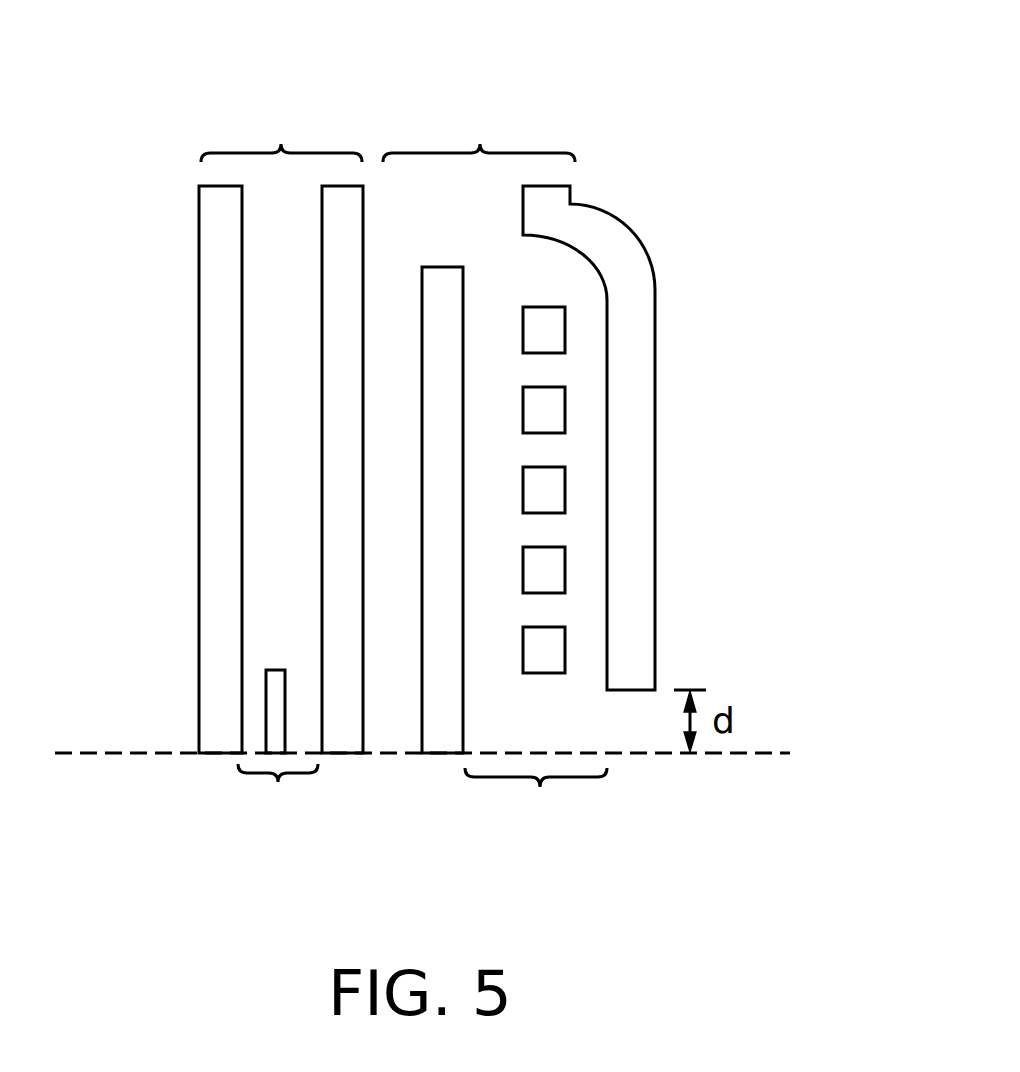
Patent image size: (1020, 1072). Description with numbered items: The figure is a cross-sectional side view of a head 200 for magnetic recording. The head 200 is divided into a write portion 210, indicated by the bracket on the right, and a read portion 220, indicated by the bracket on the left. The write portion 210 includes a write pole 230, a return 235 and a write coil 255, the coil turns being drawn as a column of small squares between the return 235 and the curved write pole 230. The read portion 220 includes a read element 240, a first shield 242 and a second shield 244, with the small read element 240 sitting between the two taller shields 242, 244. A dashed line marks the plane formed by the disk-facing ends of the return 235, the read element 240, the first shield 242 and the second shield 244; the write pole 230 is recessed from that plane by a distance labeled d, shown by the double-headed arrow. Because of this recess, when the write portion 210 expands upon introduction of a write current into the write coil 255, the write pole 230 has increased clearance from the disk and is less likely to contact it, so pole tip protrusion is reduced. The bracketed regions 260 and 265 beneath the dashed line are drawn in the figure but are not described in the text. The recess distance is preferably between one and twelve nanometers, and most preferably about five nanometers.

The head 200 is at (640, 122).
The write portion 210 is at (479, 131).
The read portion 220 is at (281, 131).
The write pole 230 is at (638, 573).
The return 235 is at (436, 283).
The read element 240 is at (268, 668).
The first shield 242 is at (322, 267).
The second shield 244 is at (199, 347).
The write coil 255 is at (556, 306).
The first spacing region 260 is at (536, 804).
The second spacing region 265 is at (278, 799).